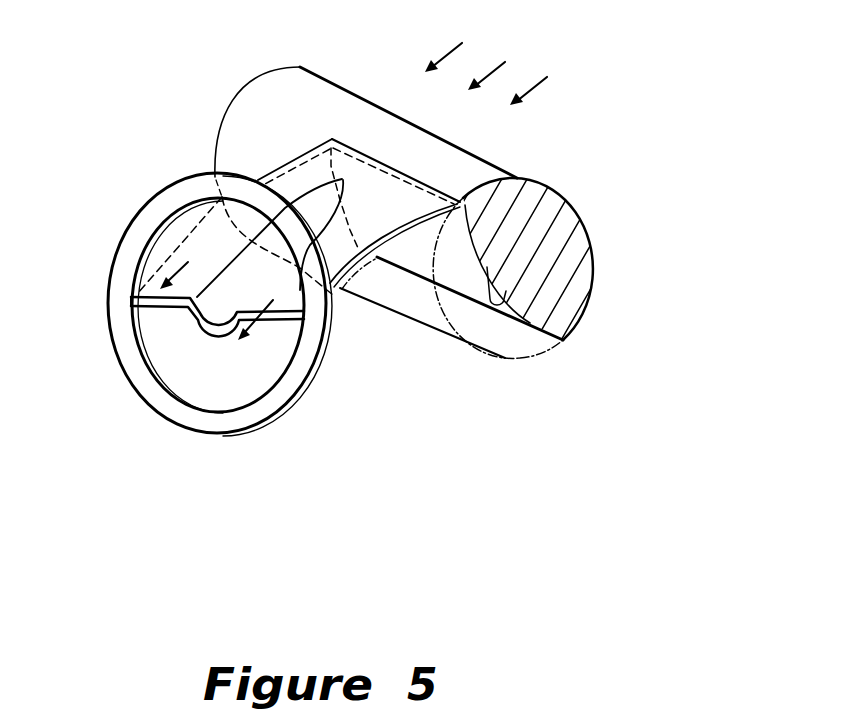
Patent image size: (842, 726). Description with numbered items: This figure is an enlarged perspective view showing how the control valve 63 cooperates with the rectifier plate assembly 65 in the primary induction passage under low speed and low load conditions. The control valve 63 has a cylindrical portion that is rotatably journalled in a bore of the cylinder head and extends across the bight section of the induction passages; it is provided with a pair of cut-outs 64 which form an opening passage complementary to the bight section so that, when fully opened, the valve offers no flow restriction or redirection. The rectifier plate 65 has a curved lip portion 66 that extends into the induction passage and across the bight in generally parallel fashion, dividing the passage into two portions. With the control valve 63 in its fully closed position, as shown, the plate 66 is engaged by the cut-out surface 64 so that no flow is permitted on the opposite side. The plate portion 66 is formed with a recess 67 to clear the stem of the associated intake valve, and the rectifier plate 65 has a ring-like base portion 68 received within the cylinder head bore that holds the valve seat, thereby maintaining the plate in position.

The control valve 63 is at (516, 174).
The cut-outs 64 is at (503, 298).
The rectifier plate assembly 65 is at (128, 198).
The curved lip portion 66 is at (312, 177).
The recess 67 is at (220, 311).
The ring-like base portion 68 is at (110, 341).